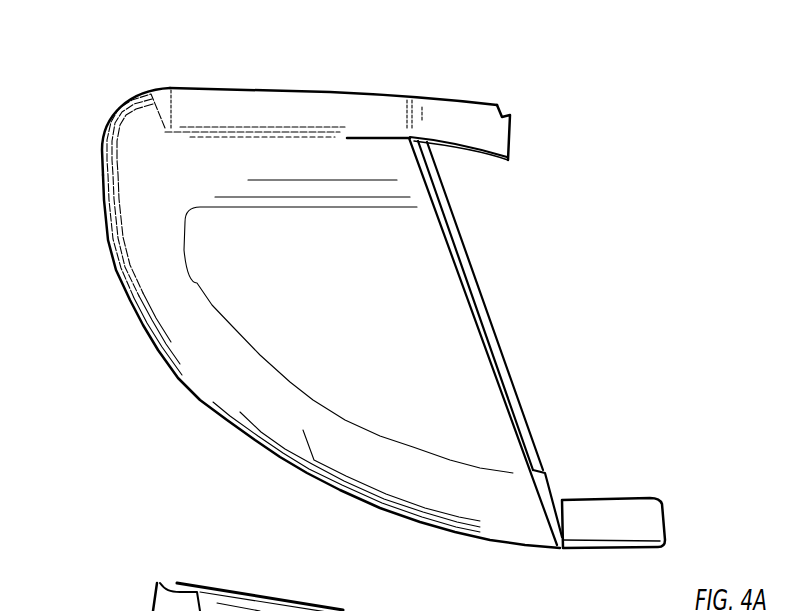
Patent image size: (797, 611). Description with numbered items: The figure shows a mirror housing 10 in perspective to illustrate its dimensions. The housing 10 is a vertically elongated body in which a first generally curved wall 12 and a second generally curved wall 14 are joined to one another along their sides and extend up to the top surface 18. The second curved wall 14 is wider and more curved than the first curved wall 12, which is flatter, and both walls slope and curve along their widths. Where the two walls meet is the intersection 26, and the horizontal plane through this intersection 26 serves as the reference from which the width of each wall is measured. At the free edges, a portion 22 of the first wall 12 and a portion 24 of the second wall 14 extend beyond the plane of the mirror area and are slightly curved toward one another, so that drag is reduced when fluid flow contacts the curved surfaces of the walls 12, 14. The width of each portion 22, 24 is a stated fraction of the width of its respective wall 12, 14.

The housing 10 is at (383, 321).
The first generally curved wall 12 is at (264, 110).
The second generally curved wall 14 is at (222, 420).
The top surface 18 is at (259, 595).
The portion 22 is at (510, 115).
The portion 24 is at (665, 525).
The intersection 26 is at (104, 137).